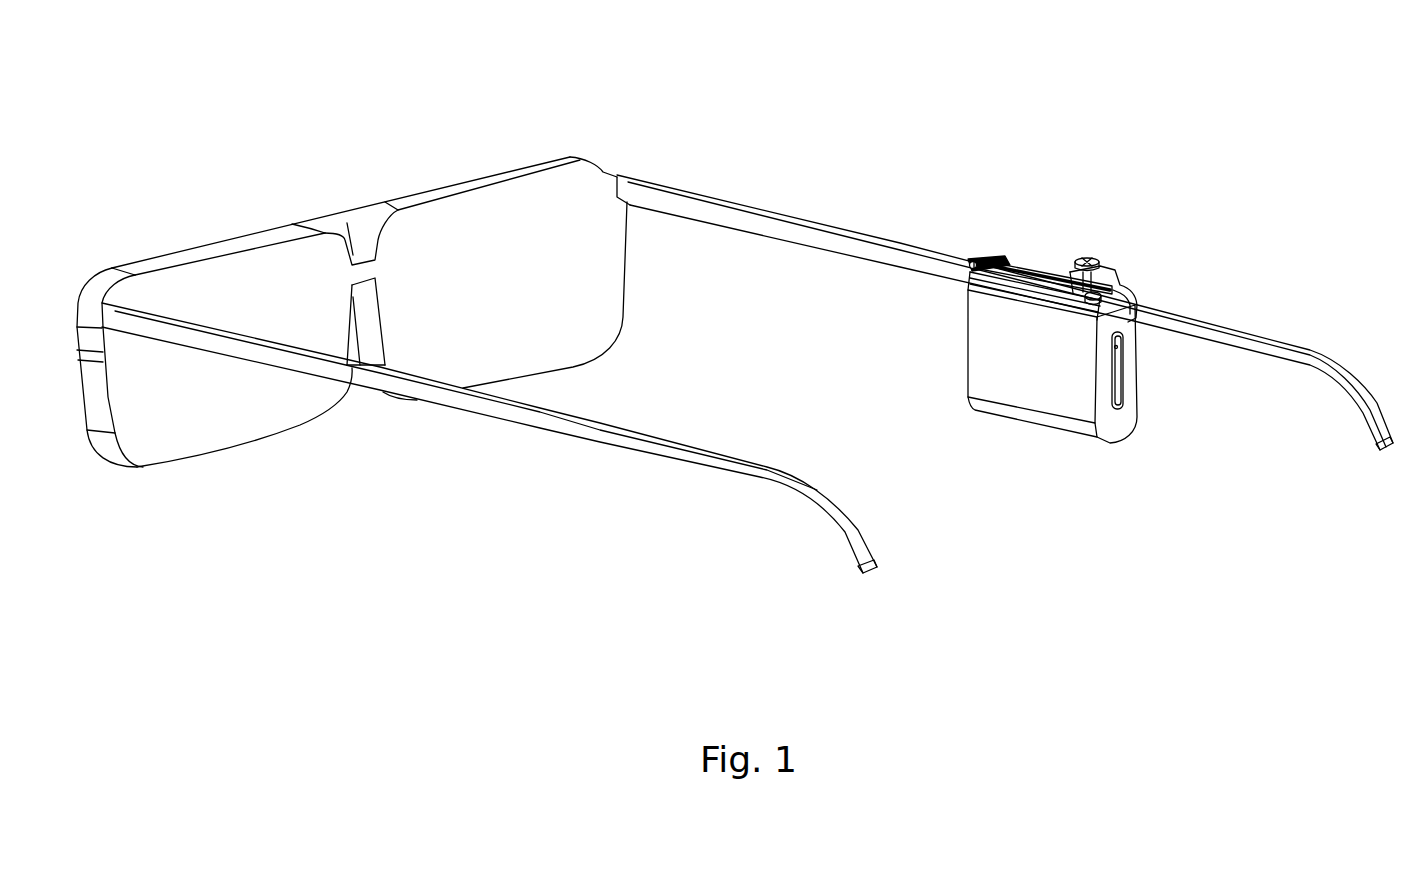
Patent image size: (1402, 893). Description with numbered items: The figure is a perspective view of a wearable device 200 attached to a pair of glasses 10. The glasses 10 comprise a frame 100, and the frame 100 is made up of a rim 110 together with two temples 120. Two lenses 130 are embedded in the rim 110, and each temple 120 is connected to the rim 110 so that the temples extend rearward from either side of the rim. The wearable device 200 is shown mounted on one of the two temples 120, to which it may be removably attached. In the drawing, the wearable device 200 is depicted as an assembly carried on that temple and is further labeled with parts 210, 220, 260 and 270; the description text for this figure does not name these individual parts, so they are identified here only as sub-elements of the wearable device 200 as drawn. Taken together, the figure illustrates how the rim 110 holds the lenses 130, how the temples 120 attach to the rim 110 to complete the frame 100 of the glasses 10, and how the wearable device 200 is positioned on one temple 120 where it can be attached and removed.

The glasses 10 is at (145, 134).
The frame 100 is at (687, 72).
The rim 110 is at (597, 148).
The temples 120 is at (655, 203).
The lenses 130 is at (427, 227).
The wearable device 200 is at (1163, 155).
The clamp bracket 210 is at (1120, 265).
The main body housing 220 is at (977, 347).
The fastening screw 260 is at (1060, 268).
The connecting rail 270 is at (1027, 268).